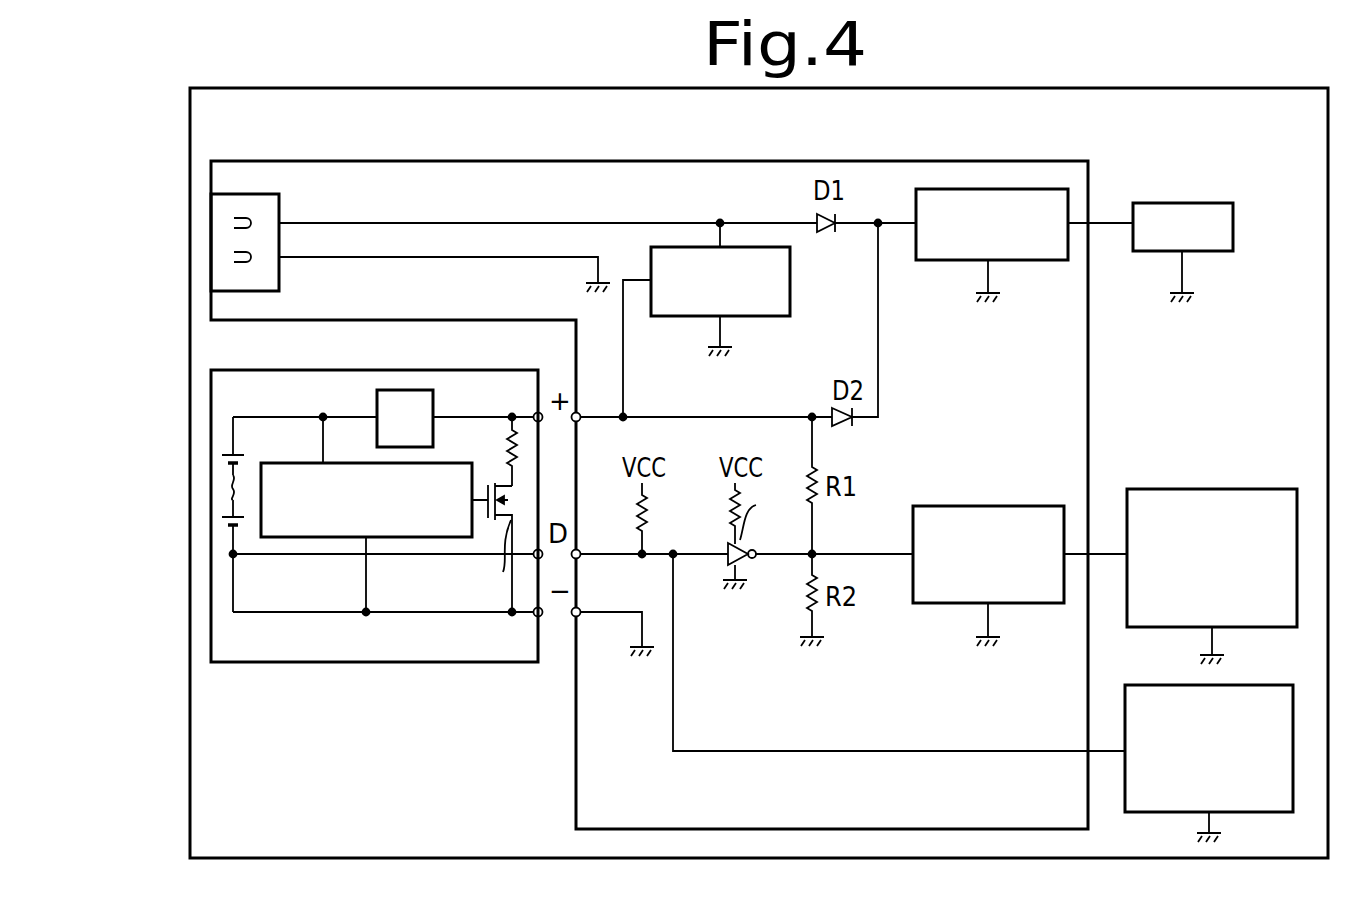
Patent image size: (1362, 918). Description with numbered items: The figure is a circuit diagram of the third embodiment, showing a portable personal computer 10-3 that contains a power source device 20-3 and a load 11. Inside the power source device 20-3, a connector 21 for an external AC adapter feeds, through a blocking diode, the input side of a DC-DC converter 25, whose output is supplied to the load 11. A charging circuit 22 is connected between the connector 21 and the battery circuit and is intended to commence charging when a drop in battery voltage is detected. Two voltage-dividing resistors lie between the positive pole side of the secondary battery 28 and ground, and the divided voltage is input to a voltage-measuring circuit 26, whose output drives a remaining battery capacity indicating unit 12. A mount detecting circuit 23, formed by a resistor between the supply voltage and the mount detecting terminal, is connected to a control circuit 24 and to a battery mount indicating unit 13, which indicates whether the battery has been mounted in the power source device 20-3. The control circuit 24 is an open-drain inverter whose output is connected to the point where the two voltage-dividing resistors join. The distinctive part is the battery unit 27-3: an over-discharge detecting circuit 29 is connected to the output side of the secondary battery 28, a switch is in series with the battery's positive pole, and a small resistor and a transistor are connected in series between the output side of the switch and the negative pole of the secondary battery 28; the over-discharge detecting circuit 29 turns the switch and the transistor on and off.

The portable personal computer 10-3 is at (190, 100).
The power source device 20-3 is at (1088, 186).
The connector 21 is at (244, 194).
The charging circuit 22 is at (790, 278).
The DC-DC converter 25 is at (1035, 260).
The load 11 is at (1233, 232).
The voltage-measuring circuit 26 is at (1037, 506).
The remaining battery capacity indicating unit 12 is at (1268, 489).
The battery mount indicating unit 13 is at (1275, 685).
The battery unit 27-3 is at (373, 664).
The secondary battery 28 is at (222, 485).
The over-discharge detecting circuit 29 is at (285, 463).
The mount detecting circuit 23 is at (640, 546).
The control circuit 24 is at (738, 572).